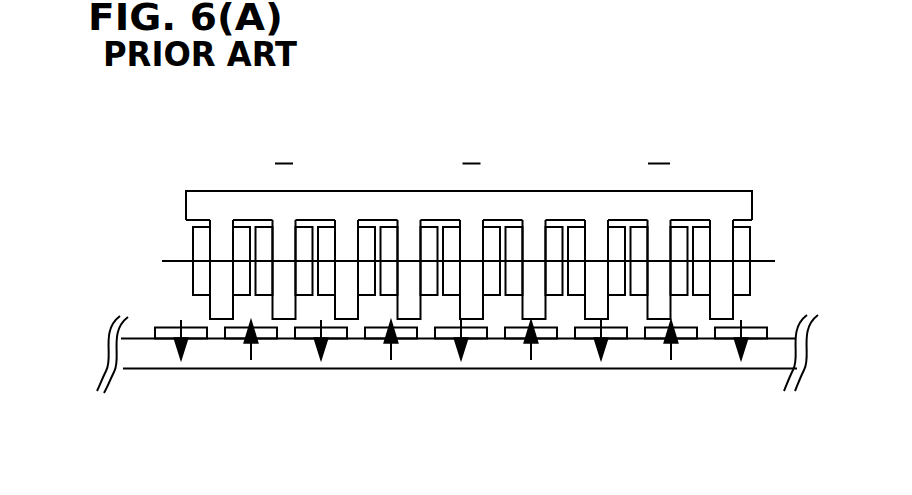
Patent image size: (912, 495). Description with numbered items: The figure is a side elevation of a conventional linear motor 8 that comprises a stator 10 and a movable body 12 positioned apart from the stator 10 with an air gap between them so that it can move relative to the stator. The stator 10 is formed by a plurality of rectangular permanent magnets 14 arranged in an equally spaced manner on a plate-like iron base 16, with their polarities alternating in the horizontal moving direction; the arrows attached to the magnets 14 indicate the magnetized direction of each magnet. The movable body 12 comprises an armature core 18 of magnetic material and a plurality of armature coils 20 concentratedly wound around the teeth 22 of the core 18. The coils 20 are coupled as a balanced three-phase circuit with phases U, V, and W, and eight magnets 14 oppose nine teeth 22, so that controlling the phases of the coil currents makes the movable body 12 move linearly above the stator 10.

The linear motor 8 is at (638, 117).
The stator 10 is at (80, 320).
The movable body 12 is at (80, 175).
The permanent magnet 14 is at (585, 332).
The iron base 16 is at (488, 358).
The armature core 18 is at (743, 207).
The armature coil 20 is at (742, 237).
The tooth 22 is at (720, 305).